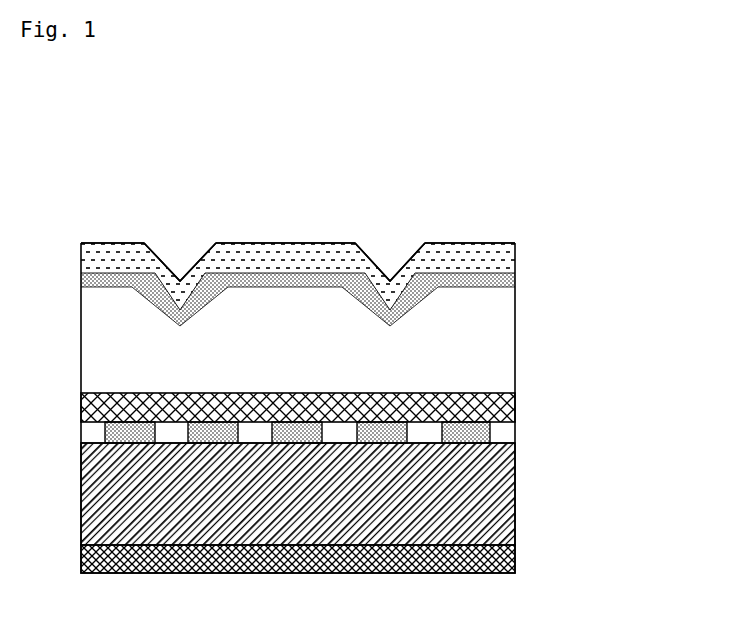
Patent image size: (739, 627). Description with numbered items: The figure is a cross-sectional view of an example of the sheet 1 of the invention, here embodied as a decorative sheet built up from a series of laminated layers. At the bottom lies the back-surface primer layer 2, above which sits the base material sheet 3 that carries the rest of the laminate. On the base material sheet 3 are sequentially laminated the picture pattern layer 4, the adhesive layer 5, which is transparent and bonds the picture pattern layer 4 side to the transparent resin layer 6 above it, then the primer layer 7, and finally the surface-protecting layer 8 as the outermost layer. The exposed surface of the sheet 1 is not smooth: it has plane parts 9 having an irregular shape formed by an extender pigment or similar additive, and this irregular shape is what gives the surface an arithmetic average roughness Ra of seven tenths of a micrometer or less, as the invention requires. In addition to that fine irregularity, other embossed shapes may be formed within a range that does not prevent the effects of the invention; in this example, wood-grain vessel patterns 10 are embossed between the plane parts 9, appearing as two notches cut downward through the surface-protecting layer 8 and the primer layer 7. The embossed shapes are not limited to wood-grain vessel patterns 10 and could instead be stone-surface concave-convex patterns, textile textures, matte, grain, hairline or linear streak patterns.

The sheet 1 is at (307, 183).
The back-surface primer layer 2 is at (482, 558).
The base material sheet 3 is at (515, 472).
The picture pattern layer 4 is at (515, 433).
The adhesive layer 5 is at (500, 408).
The transparent resin layer 6 is at (480, 355).
The primer layer 7 is at (482, 283).
The surface-protecting layer 8 is at (482, 257).
The plane part 9 is at (118, 243).
The wood-grain vessel pattern 10 is at (180, 270).